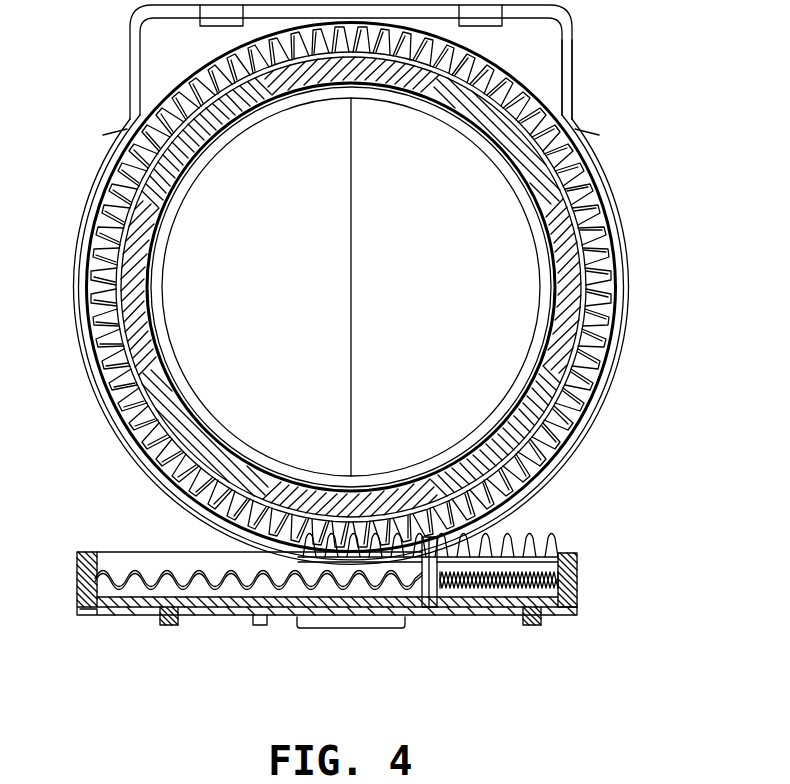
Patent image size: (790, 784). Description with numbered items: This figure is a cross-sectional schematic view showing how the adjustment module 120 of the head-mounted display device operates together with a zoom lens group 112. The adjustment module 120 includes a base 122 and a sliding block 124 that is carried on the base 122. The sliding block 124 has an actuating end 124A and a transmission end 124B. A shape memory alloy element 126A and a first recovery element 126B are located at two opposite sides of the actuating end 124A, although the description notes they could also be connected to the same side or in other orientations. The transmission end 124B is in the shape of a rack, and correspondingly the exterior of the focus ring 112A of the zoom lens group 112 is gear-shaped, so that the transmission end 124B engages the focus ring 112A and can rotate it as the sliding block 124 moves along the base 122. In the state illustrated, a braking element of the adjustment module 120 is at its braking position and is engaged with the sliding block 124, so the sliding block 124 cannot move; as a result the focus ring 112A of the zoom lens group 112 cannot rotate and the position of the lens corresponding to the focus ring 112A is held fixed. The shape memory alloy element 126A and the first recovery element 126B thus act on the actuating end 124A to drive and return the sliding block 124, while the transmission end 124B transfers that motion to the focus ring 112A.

The zoom lens group 112 is at (542, 67).
The focus ring 112A is at (575, 92).
The adjustment module 120 is at (222, 622).
The base 122 is at (568, 585).
The sliding block 124 is at (484, 528).
The actuating end 124A is at (436, 562).
The transmission end 124B is at (455, 530).
The shape memory alloy element 126A is at (272, 587).
The first recovery element 126B is at (542, 582).